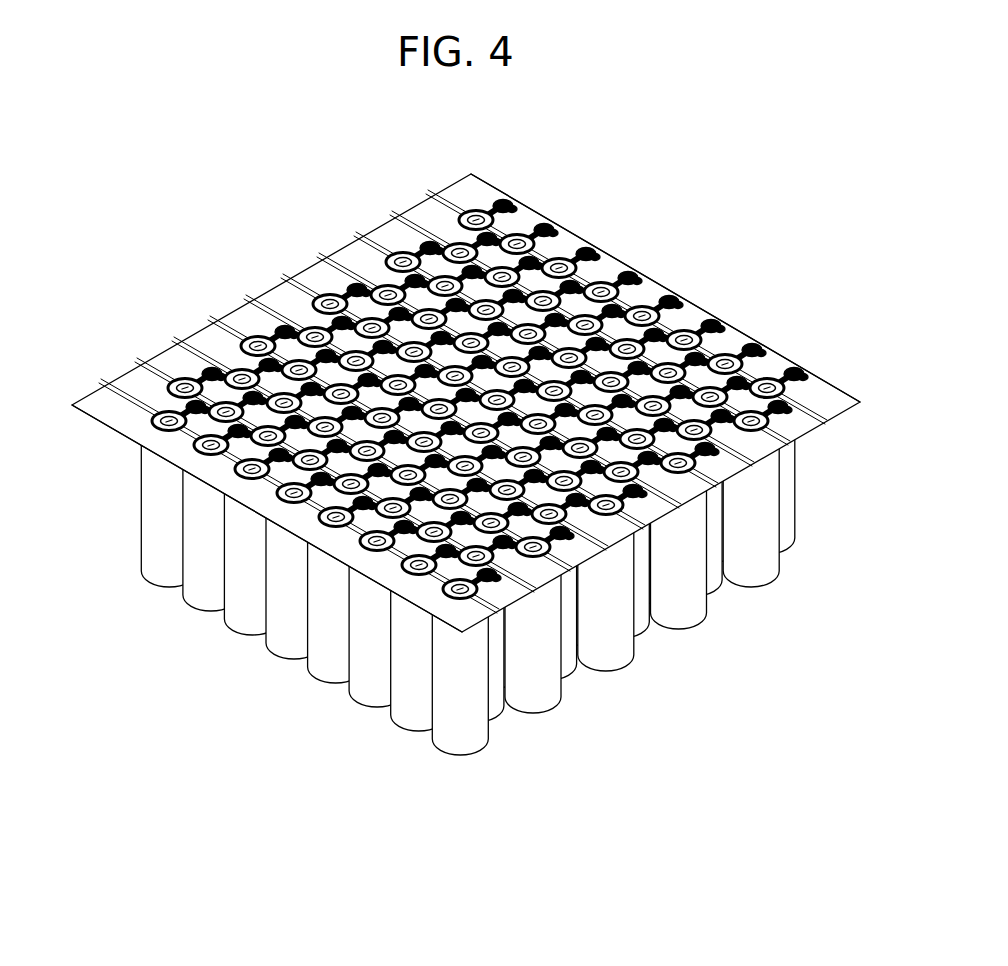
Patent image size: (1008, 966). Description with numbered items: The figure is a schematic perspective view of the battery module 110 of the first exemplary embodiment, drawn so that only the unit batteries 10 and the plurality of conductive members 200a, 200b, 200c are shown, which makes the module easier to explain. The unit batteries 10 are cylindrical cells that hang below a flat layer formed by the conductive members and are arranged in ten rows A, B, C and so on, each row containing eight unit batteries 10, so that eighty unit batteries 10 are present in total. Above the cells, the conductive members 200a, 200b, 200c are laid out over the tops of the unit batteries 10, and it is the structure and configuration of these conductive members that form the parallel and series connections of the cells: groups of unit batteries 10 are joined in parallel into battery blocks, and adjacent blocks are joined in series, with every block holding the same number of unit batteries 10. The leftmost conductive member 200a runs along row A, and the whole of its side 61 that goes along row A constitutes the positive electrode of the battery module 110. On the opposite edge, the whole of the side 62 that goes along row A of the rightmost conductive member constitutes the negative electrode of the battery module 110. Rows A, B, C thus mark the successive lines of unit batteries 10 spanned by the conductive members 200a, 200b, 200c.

The unit battery 10 is at (468, 508).
The battery module 110 is at (618, 242).
The side 61 is at (293, 534).
The side 62 is at (727, 318).
The conductive member 200a is at (107, 400).
The conductive member 200b is at (170, 365).
The conductive member 200c is at (203, 325).
The row A is at (490, 757).
The row B is at (500, 725).
The row C is at (558, 712).